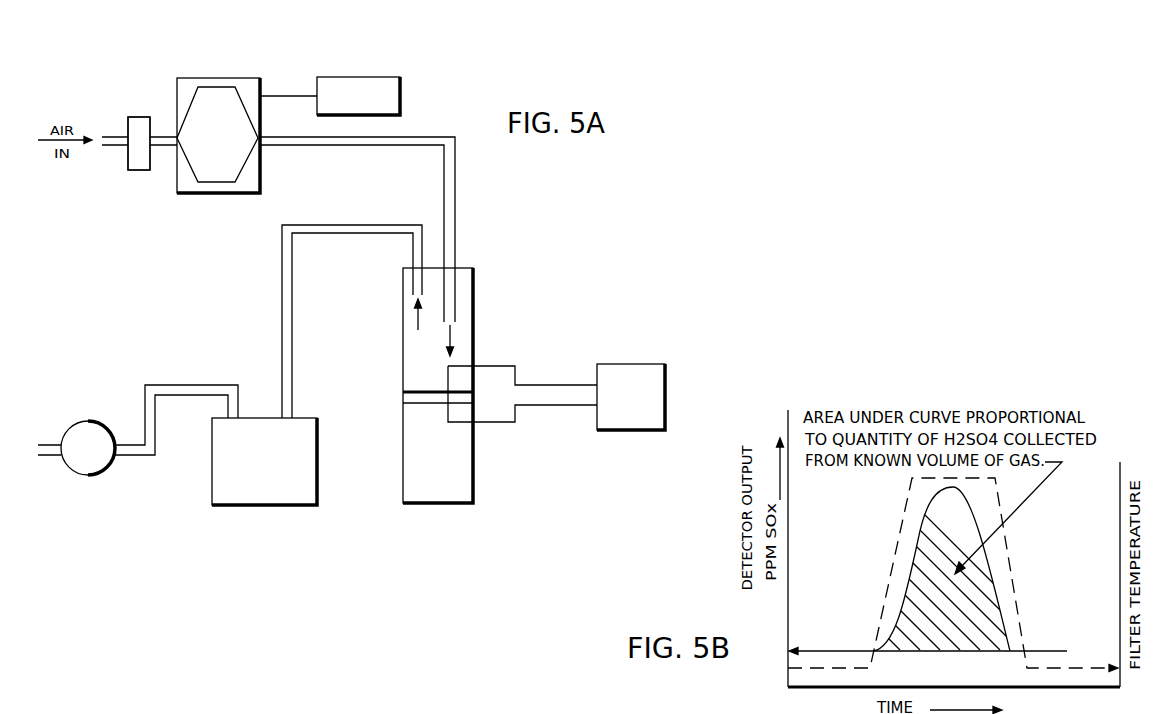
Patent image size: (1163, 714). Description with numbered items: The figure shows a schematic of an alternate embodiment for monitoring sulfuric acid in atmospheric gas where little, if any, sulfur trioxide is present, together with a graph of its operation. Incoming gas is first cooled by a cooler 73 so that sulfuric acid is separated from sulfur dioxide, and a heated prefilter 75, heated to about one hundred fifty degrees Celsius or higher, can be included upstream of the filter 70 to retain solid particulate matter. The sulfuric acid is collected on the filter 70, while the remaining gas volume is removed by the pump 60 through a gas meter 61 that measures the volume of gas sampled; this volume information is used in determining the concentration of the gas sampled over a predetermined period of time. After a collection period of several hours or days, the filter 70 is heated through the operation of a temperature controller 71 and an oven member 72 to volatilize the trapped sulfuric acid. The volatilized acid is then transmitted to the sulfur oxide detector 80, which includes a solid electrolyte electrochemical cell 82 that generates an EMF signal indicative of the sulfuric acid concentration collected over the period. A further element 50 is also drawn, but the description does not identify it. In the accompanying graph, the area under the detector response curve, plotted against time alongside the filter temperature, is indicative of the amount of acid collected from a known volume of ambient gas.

The recorder / readout unit 50 is at (660, 422).
The pump 60 is at (98, 412).
The gas meter 61 is at (307, 500).
The filter 70 is at (202, 265).
The temperature controller 71 is at (384, 80).
The oven member 72 is at (262, 183).
The cooler 73 is at (134, 156).
The heated prefilter 75 is at (131, 165).
The SOx detector 80 is at (509, 240).
The solid electrolyte electrochemical cell 82 is at (534, 465).